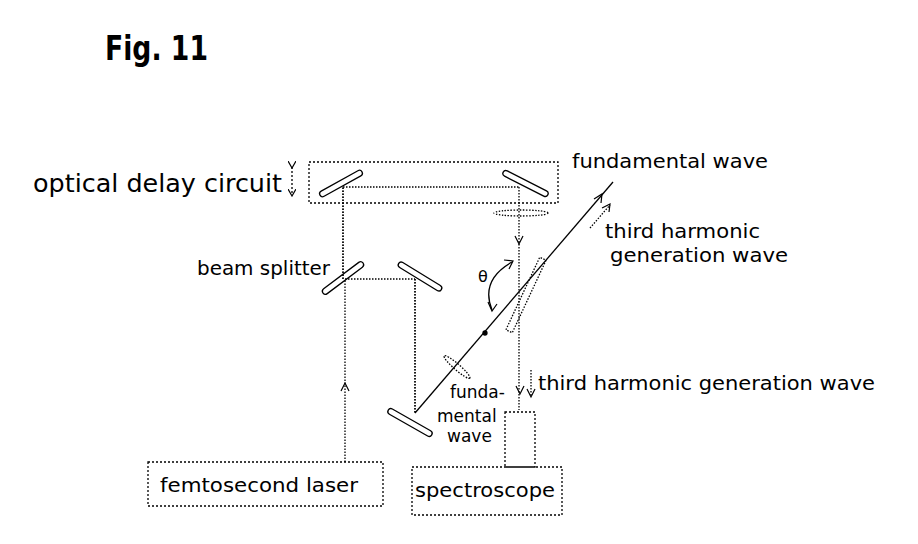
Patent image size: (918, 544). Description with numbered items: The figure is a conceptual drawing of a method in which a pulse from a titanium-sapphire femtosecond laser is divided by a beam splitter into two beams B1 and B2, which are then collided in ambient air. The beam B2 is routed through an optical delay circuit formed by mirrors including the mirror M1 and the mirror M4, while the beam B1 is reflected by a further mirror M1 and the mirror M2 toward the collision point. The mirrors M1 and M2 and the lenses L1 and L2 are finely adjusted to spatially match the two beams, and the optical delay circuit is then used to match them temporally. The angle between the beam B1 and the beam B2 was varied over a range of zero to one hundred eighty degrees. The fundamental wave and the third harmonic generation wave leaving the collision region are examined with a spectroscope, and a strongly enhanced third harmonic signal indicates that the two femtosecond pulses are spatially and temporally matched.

The mirror M1 is at (382, 229).
The mirror M2 is at (410, 424).
The mirror M4 is at (528, 182).
The beam B1 is at (406, 346).
The beam B2 is at (356, 233).
The lens L1 is at (448, 346).
The lens L2 is at (476, 220).